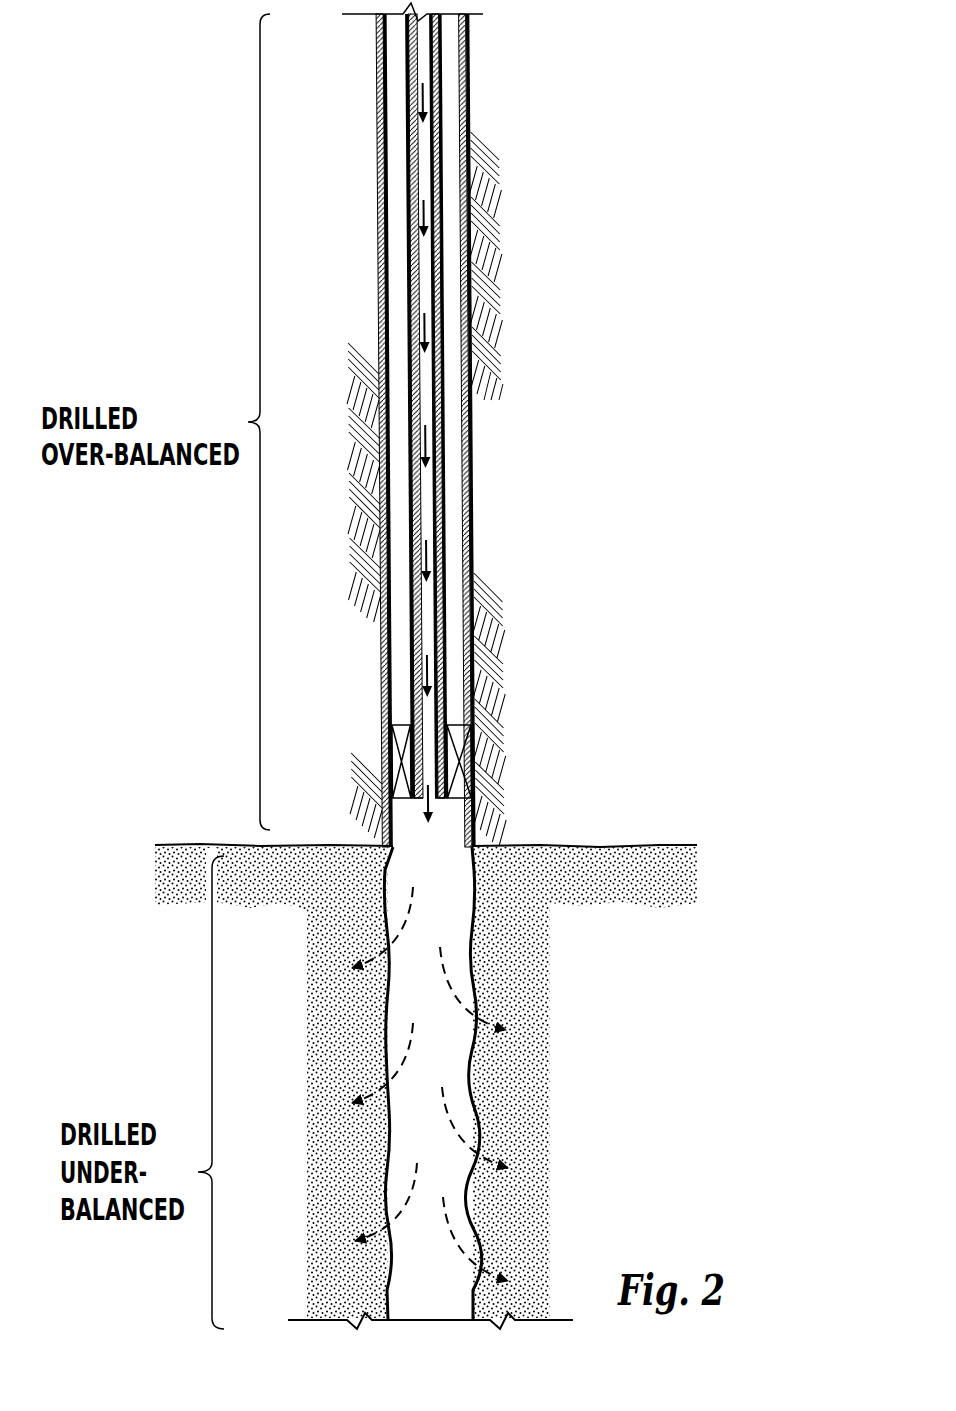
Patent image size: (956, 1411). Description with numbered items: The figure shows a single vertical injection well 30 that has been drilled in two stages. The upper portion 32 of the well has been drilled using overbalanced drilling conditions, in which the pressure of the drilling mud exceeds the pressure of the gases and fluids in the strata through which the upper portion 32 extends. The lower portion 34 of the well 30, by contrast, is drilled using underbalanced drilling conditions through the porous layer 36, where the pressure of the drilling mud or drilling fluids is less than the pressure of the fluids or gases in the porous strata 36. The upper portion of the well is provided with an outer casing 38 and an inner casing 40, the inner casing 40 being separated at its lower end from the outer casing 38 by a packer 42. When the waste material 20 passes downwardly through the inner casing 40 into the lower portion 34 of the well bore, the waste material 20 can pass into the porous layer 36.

The waste material 20 is at (420, 212).
The injection well 30 is at (470, 110).
The upper portion 32 is at (378, 260).
The lower portion 34 is at (396, 1040).
The porous layer 36 is at (507, 982).
The outer casing 38 is at (474, 452).
The inner casing 40 is at (445, 517).
The packer 42 is at (398, 733).